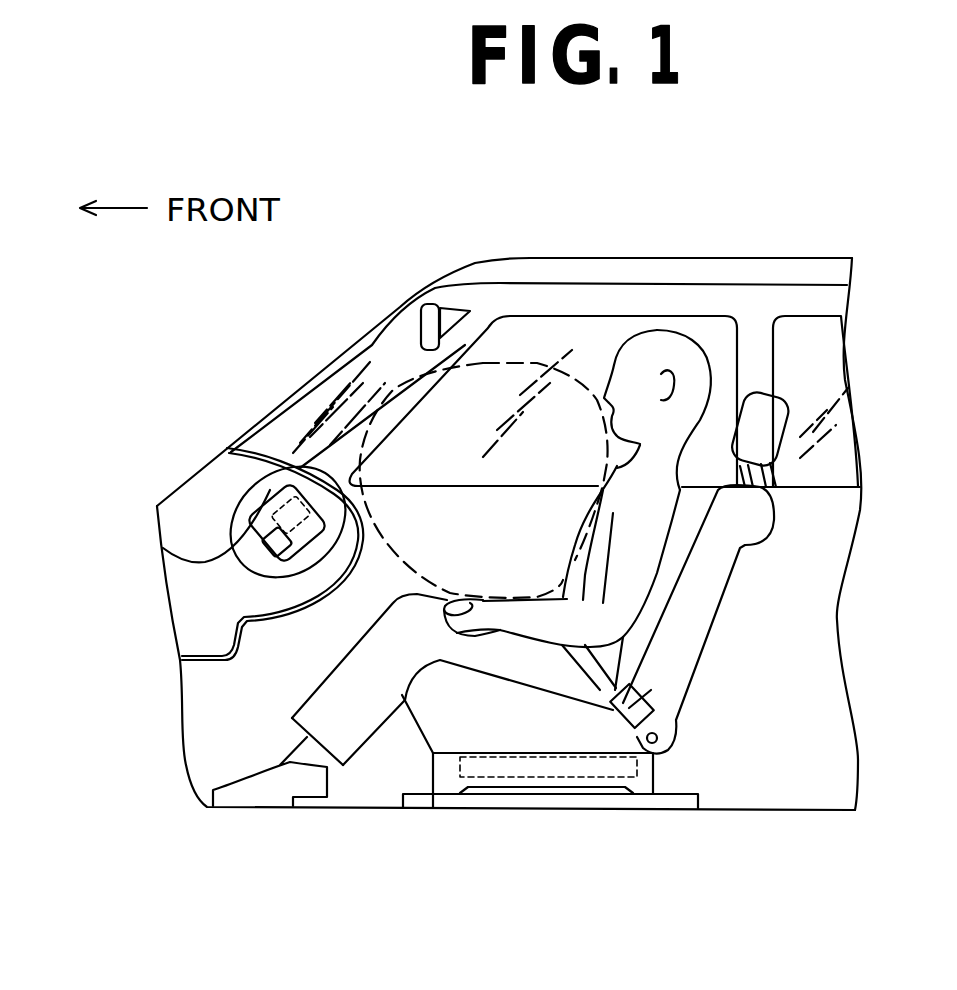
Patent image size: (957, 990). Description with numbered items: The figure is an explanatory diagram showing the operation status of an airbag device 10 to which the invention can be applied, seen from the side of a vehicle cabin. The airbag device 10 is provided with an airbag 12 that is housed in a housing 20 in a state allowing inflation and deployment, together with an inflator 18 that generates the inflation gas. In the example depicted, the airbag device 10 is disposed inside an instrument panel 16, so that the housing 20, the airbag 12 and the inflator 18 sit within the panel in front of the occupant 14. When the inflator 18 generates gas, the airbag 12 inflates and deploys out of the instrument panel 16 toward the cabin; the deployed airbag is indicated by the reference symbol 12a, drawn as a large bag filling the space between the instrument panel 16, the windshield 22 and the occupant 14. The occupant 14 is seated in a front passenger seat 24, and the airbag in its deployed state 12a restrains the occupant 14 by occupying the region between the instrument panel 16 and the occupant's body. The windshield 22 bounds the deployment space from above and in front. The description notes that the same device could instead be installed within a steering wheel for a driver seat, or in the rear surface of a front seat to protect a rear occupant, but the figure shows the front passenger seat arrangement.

The airbag device 10 is at (178, 486).
The airbag 12 is at (285, 484).
The airbag in a deployed state 12a is at (536, 364).
The occupant 14 is at (680, 330).
The instrument panel 16 is at (208, 488).
The inflator 18 is at (160, 534).
The housing 20 is at (276, 500).
The windshield 22 is at (384, 338).
The front passenger seat 24 is at (727, 612).